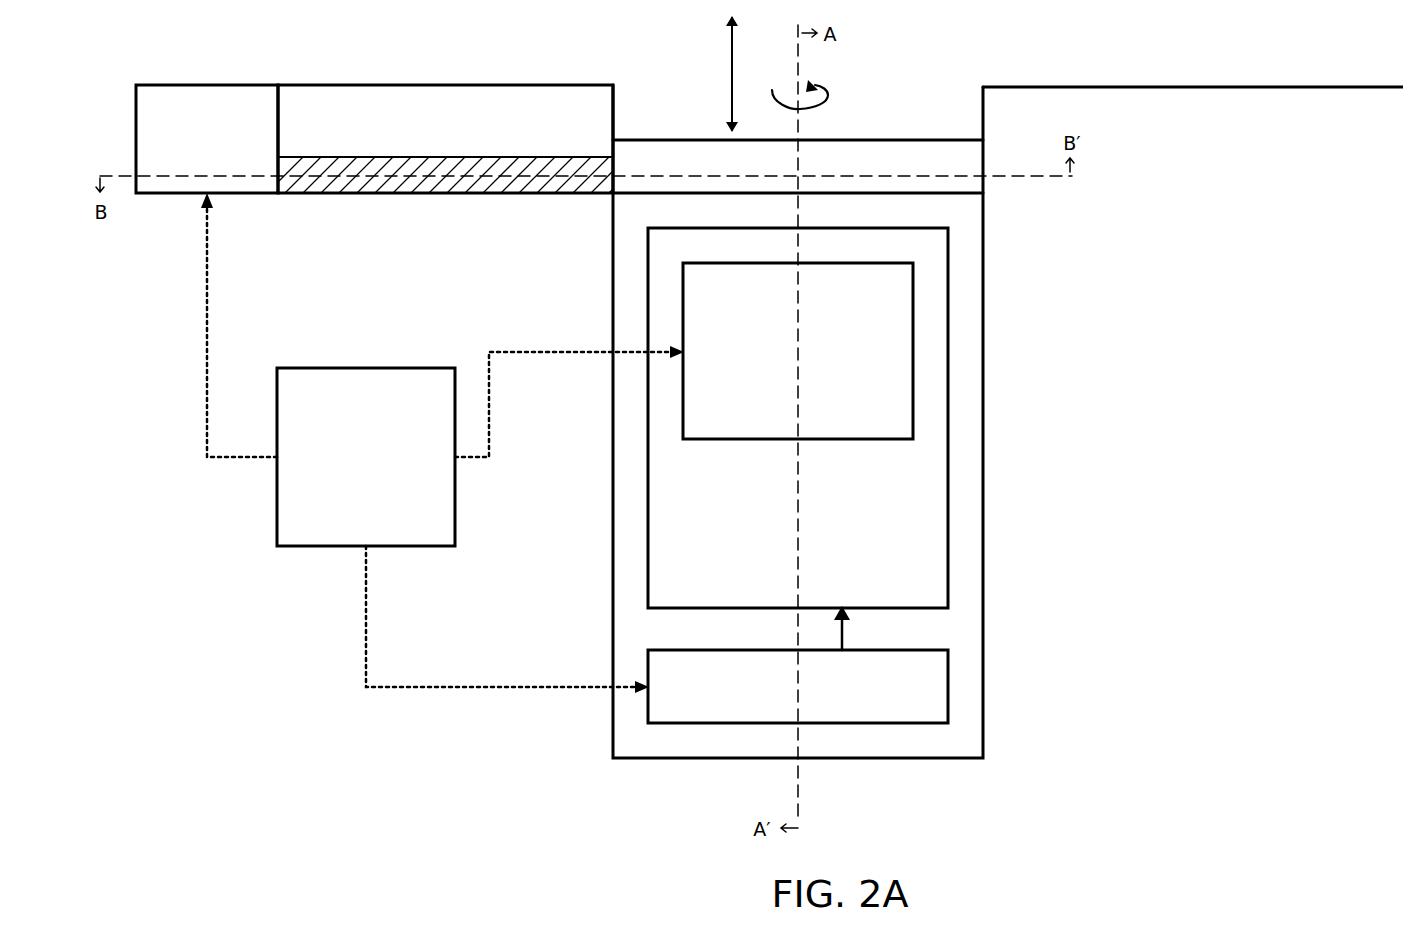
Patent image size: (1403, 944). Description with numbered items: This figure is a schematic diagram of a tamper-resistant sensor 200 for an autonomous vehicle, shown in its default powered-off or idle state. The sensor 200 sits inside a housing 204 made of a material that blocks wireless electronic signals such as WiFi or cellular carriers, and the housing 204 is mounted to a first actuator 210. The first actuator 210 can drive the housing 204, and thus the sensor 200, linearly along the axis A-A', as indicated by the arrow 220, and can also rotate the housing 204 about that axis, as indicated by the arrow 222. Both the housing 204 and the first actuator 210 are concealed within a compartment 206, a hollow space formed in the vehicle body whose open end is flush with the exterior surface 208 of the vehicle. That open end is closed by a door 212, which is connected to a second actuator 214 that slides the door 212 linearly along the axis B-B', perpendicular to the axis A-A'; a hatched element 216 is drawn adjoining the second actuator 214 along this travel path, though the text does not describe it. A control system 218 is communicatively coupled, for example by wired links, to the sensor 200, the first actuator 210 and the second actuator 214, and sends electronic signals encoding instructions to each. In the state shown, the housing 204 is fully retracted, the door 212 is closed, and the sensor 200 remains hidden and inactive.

The tamper-resistant sensor 200 is at (691, 326).
The housing 204 is at (658, 598).
The compartment 206 is at (983, 472).
The exterior surface 208 is at (1226, 87).
The first actuator 210 is at (658, 713).
The door 212 is at (898, 155).
The second actuator 214 is at (191, 164).
The door slide / track 216 is at (418, 190).
The control system 218 is at (350, 498).
The arrow 220 is at (732, 58).
The arrow 222 is at (824, 100).